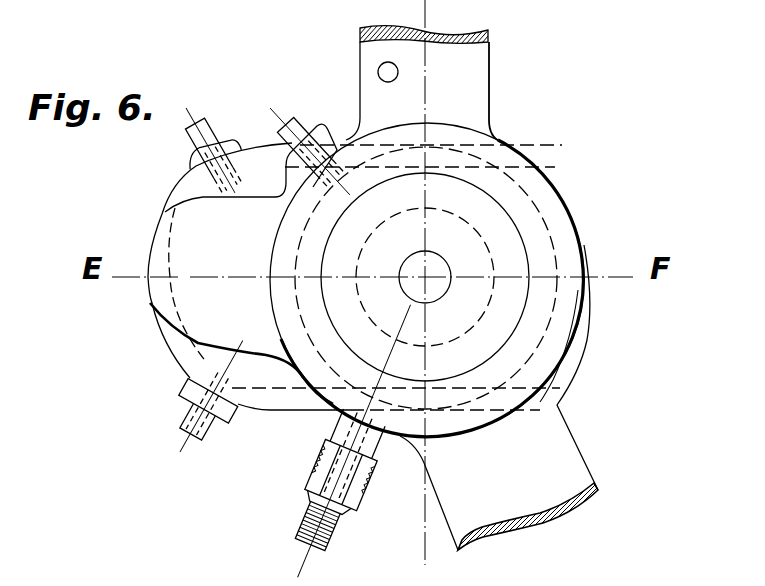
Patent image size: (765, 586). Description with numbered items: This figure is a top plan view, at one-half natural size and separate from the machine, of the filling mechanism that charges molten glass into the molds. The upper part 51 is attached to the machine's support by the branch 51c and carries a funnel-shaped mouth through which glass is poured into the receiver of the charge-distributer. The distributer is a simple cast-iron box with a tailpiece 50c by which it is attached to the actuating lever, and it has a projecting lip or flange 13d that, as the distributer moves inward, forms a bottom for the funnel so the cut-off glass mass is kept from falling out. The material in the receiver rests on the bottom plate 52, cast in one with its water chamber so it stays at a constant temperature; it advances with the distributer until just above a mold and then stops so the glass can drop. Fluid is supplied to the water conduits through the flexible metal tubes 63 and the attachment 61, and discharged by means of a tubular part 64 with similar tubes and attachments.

The projecting lip or flange 13d is at (220, 260).
The tailpiece 50c is at (426, 84).
The upper part 51 is at (408, 280).
The branch 51c is at (527, 405).
The bottom plate 52 is at (604, 368).
The attachment 61 is at (360, 495).
The flexible metal tubes 63 is at (205, 431).
The tubular part 64 is at (191, 141).